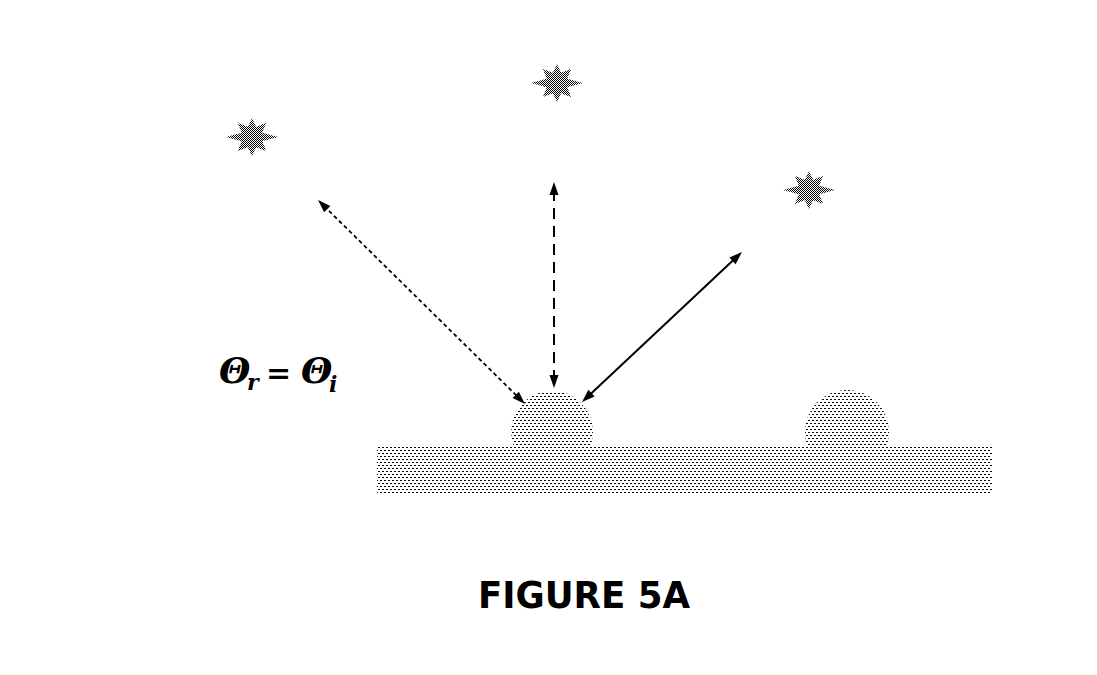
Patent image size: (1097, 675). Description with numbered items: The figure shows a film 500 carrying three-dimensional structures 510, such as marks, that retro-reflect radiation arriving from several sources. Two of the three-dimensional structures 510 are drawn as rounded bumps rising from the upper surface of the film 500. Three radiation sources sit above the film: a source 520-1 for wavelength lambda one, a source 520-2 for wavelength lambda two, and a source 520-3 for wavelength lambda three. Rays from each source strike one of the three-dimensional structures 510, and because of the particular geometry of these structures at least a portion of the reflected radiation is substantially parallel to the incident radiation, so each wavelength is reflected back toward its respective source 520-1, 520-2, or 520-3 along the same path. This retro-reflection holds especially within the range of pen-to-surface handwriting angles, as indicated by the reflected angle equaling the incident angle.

The film 500 is at (955, 447).
The three-dimensional structures 510 is at (593, 423).
The source for wavelength λ1 520-1 is at (844, 163).
The source for wavelength λ2 520-2 is at (591, 61).
The source for wavelength λ3 520-3 is at (282, 111).